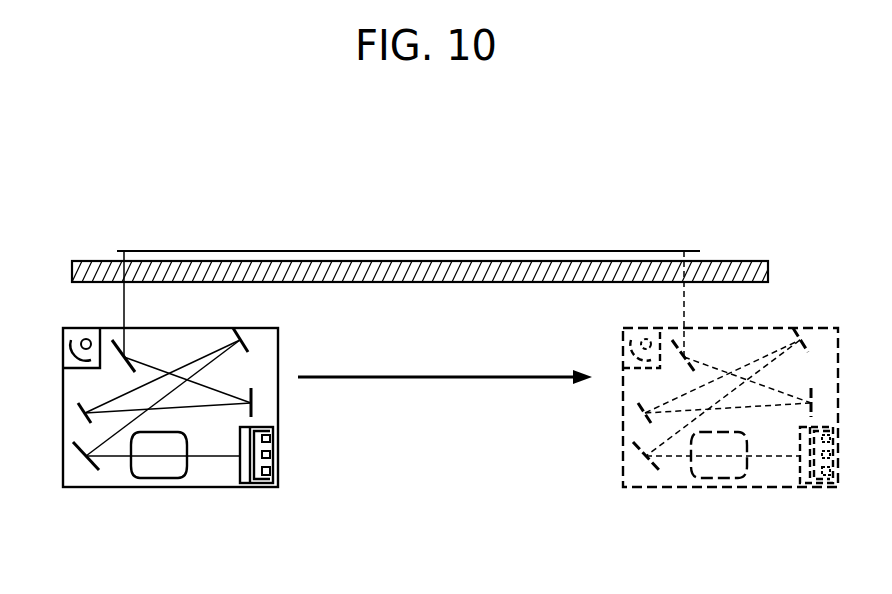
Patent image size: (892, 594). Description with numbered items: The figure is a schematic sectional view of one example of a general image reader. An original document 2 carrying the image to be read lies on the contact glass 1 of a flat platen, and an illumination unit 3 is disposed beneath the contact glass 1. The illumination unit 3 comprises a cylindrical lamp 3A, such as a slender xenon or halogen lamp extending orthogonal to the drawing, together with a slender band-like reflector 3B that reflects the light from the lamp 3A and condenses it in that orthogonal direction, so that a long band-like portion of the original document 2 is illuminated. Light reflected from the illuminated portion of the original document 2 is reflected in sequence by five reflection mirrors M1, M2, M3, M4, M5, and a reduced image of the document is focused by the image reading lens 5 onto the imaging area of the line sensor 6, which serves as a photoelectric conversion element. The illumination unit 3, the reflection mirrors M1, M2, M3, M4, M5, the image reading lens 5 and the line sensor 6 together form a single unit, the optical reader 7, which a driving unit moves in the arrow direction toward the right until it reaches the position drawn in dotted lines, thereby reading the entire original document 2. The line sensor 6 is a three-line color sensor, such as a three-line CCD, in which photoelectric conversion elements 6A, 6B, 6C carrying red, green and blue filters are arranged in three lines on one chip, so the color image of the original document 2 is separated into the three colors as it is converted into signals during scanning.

The contact glass 1 is at (97, 270).
The original document 2 is at (233, 250).
The illumination unit 3 is at (63, 330).
The cylindrical lamp 3A is at (87, 339).
The reflector 3B is at (68, 355).
The image reading lens 5 is at (162, 466).
The line sensor 6 is at (257, 476).
The photoelectric conversion element 6A is at (268, 438).
The photoelectric conversion element 6B is at (268, 455).
The photoelectric conversion element 6C is at (270, 472).
The optical reader 7 is at (63, 467).
The reflection mirror M1 is at (127, 368).
The reflection mirror M2 is at (256, 408).
The reflection mirror M3 is at (80, 422).
The reflection mirror M4 is at (245, 338).
The reflection mirror M5 is at (92, 463).